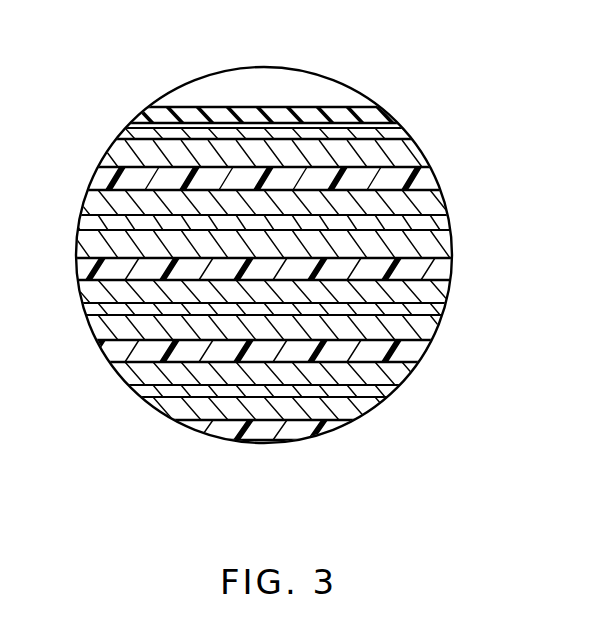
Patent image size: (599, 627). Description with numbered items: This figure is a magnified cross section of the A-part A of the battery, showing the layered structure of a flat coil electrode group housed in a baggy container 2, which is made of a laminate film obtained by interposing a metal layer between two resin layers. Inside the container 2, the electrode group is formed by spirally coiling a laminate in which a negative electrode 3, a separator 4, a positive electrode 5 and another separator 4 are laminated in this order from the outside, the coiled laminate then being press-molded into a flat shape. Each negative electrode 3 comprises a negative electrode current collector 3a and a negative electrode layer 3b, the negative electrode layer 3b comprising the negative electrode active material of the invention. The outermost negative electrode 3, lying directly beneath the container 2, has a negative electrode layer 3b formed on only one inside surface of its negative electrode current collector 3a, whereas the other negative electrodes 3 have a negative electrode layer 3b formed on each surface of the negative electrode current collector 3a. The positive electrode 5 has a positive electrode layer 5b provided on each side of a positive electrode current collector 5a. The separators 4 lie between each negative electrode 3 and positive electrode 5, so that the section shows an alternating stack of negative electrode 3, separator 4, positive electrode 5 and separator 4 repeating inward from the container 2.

The A-part A is at (176, 97).
The baggy container 2 is at (387, 113).
The negative electrode 3 is at (498, 83).
The negative electrode current collector 3a is at (410, 133).
The negative electrode layer 3b is at (407, 155).
The separator 4 is at (100, 180).
The positive electrode 5 is at (527, 162).
The positive electrode current collector 5a is at (433, 223).
The positive electrode layer 5b is at (430, 197).